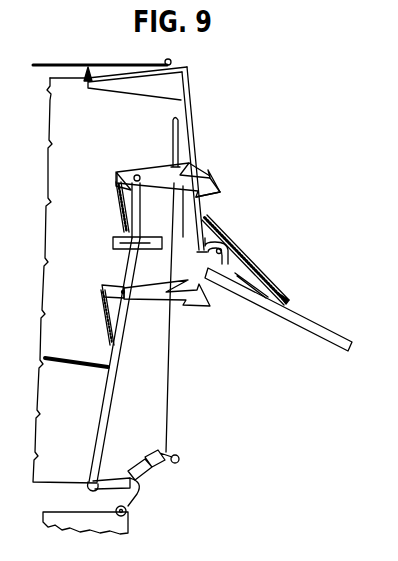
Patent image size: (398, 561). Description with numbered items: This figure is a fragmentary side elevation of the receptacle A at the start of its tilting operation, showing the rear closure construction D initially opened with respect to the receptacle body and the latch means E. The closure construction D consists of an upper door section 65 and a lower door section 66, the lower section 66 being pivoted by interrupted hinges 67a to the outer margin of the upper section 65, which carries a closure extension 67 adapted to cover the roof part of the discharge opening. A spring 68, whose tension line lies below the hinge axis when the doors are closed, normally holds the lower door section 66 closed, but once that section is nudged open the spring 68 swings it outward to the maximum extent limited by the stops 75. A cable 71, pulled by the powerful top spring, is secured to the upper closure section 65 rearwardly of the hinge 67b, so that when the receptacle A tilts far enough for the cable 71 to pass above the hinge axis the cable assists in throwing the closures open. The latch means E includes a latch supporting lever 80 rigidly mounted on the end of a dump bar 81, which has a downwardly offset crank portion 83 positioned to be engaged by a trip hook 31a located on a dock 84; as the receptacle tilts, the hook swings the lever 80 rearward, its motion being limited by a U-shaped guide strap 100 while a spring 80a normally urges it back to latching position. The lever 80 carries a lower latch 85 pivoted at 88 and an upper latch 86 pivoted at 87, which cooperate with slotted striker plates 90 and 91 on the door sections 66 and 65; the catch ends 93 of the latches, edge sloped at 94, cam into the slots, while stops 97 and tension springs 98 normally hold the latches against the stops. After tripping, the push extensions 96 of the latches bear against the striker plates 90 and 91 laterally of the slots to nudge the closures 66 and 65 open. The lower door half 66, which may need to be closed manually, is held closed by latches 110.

The cable 71 is at (68, 63).
The closure extension 67 is at (136, 86).
The interrupted hinges 67a is at (238, 243).
The hinge 67b is at (86, 74).
The upper door section 65 is at (202, 100).
The push extensions 96 is at (175, 160).
The upper latch 86 is at (165, 176).
The pivot 87 is at (133, 172).
The tension springs 98 is at (117, 186).
The stops 97 is at (120, 200).
The U-shaped guide straps 100 is at (148, 250).
The striker plate 91 is at (207, 172).
The catch ends 93 is at (216, 182).
The sloped edge 94 is at (220, 196).
The latch supporting lever 80 is at (117, 394).
The springs 80a is at (54, 368).
The pivot 88 is at (124, 286).
The lower latch 85 is at (137, 298).
The stops 75 is at (211, 236).
The lower door section 66 is at (317, 327).
The striker plate 90 is at (258, 292).
The spring 68 is at (270, 288).
The dump bar 81 is at (84, 490).
The crank portion 83 is at (112, 489).
The trip hook 31a is at (131, 500).
The latches 110 is at (180, 462).
The dock 84 is at (125, 526).
The receptacle A is at (62, 114).
The rear closure construction D is at (311, 311).
The latch means E is at (96, 413).